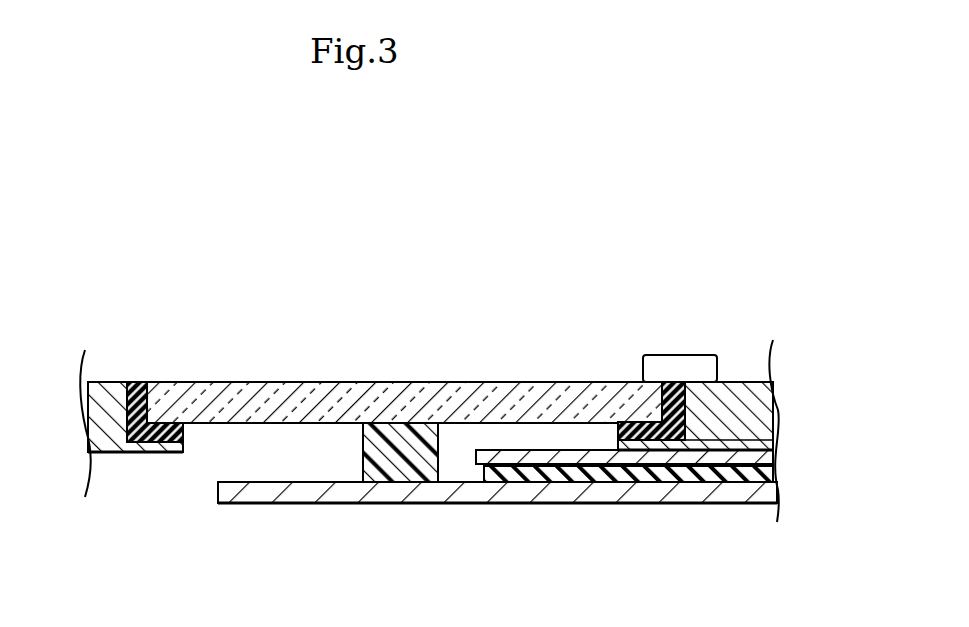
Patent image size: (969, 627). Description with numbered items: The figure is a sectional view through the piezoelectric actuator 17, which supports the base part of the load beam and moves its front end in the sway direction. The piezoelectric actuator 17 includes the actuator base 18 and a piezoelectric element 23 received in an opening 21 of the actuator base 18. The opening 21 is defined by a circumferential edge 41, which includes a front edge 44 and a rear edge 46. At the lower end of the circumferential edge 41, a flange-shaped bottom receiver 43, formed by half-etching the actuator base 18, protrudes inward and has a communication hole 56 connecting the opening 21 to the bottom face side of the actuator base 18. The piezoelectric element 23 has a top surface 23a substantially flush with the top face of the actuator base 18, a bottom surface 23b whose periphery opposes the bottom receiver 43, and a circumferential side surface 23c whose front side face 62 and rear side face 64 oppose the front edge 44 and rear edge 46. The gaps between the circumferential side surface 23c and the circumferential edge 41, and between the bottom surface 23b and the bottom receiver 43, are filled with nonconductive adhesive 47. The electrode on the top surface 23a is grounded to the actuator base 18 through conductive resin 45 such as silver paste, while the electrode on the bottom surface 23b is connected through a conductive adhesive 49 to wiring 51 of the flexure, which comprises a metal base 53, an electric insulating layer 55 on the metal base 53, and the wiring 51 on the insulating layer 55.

The piezoelectric actuator 17 is at (576, 130).
The actuator base 18 is at (105, 395).
The opening 21 is at (126, 385).
The piezoelectric element 23 is at (375, 385).
The top surface 23a is at (233, 382).
The bottom surface 23b is at (228, 425).
The circumferential side surface 23c is at (111, 454).
The circumferential edge 41 is at (148, 407).
The bottom receiver 43 is at (618, 444).
The front edge 44 is at (660, 392).
The conductive resin 45 is at (705, 366).
The rear edge 46 is at (148, 412).
The nonconductive adhesive 47 is at (138, 385).
The conductive adhesive 49 is at (422, 458).
The wiring 51 is at (365, 492).
The metal base 53 is at (760, 456).
The electric insulating layer 55 is at (760, 473).
The communication hole 56 is at (184, 452).
The front side face 62 is at (730, 405).
The rear side face 64 is at (127, 401).